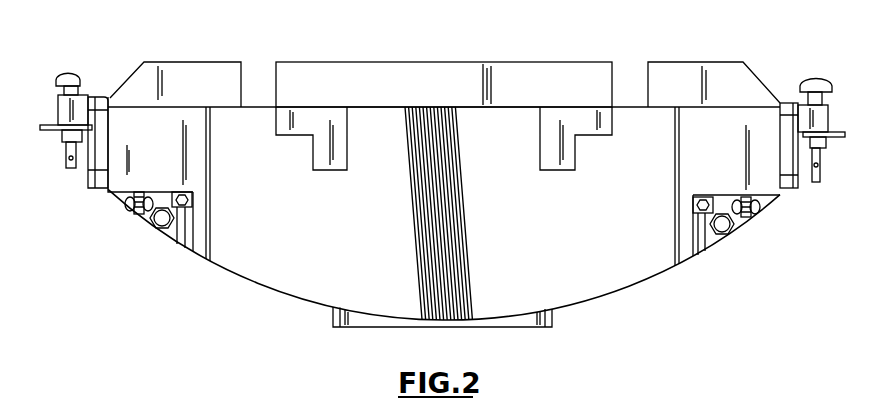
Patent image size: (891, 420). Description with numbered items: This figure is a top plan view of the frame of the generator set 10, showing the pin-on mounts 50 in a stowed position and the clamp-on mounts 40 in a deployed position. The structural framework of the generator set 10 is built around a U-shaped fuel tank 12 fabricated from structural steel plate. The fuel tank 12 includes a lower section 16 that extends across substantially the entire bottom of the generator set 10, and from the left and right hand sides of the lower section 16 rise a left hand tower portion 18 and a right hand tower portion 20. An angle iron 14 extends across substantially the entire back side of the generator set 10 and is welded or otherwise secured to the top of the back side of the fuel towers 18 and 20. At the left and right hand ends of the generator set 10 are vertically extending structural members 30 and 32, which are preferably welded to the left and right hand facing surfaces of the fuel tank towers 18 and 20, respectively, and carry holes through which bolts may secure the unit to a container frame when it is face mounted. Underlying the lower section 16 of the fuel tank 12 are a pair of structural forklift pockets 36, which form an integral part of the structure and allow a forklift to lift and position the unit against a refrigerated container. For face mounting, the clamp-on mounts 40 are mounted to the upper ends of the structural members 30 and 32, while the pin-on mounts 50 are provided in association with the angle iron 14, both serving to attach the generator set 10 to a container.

The generator set 10 is at (507, 44).
The fuel tank 12 is at (186, 266).
The angle iron 14 is at (200, 62).
The lower section 16 is at (143, 222).
The left hand tower portion 18 is at (169, 168).
The right hand tower portion 20 is at (731, 168).
The left hand vertically extending structural member 30 is at (107, 192).
The right hand vertically extending structural member 32 is at (780, 195).
The structural forklift pockets 36 is at (400, 327).
The clamp-on mounts 40 is at (62, 160).
The pin-on mounts 50 is at (328, 170).